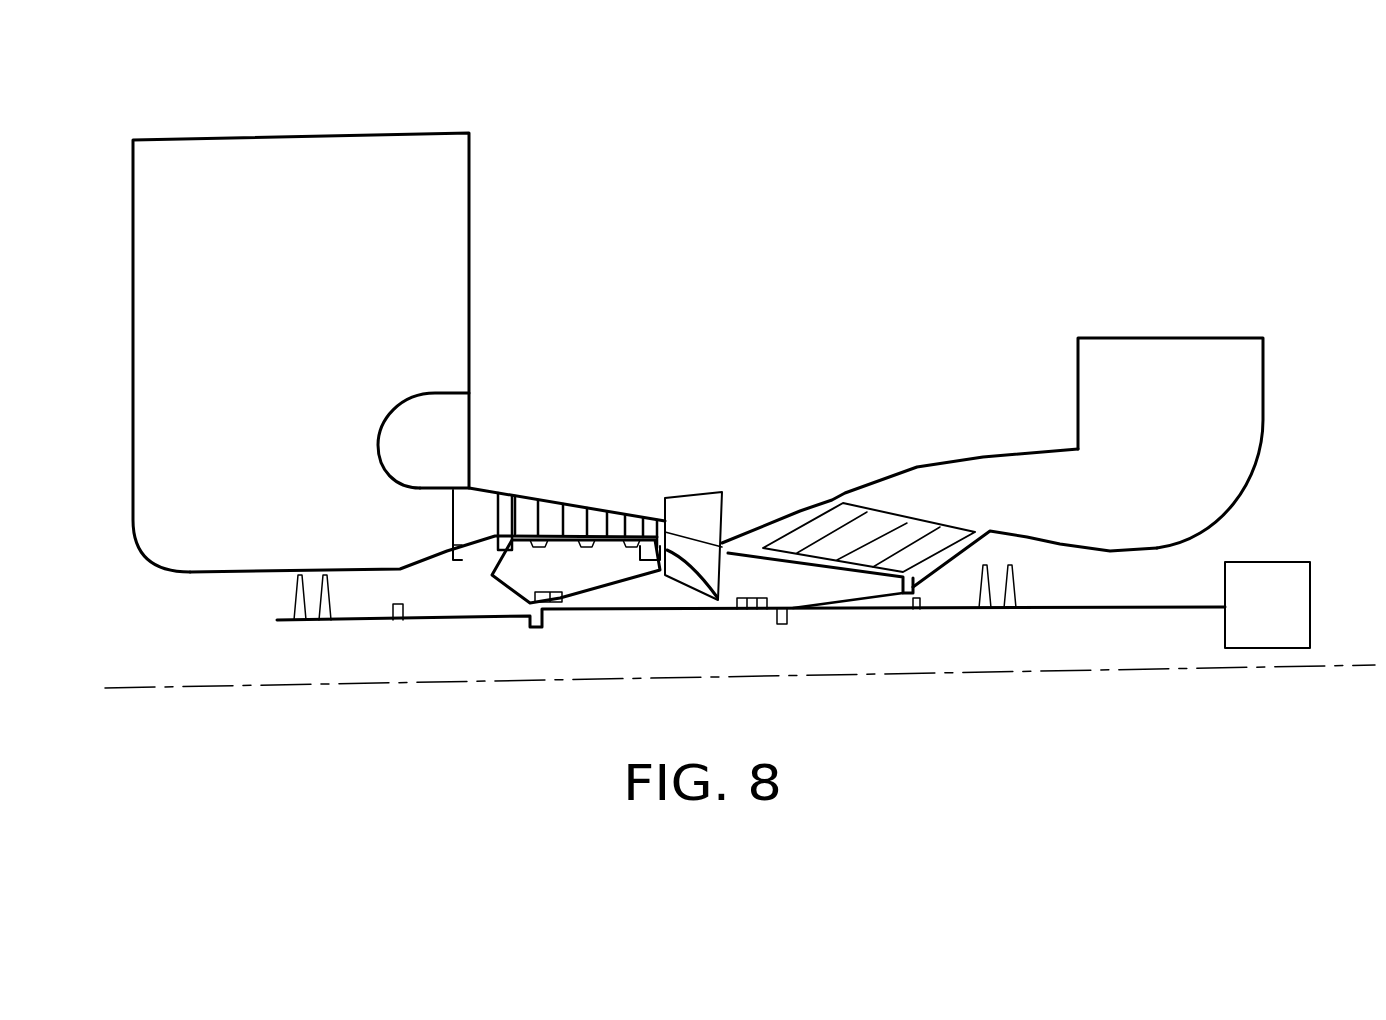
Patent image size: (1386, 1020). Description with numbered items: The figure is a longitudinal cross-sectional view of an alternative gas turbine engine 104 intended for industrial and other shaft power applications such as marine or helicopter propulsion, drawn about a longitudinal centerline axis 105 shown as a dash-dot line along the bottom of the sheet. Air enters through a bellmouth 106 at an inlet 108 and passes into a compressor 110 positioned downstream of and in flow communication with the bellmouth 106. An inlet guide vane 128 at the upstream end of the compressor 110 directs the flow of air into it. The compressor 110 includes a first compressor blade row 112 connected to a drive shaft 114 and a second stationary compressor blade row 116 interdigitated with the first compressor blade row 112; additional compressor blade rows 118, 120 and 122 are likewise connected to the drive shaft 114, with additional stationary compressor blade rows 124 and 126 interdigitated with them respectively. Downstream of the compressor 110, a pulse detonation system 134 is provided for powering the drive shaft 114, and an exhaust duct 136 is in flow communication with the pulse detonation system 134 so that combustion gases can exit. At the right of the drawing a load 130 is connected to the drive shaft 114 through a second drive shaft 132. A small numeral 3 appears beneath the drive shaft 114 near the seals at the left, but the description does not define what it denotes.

The gas turbine engine 104 is at (595, 85).
The inlet 108 is at (333, 216).
The bellmouth 106 is at (393, 413).
The inlet guide vane 128 is at (465, 518).
The first compressor blade row 112 is at (515, 490).
The compressor 110 is at (592, 485).
The additional compressor blade row 118 is at (572, 497).
The additional compressor blade row 120 is at (610, 512).
The additional stationary compressor blade row 126 is at (640, 505).
The additional compressor blade row 122 is at (648, 507).
The additional stationary compressor blade row 124 is at (592, 540).
The second stationary compressor blade row 116 is at (560, 546).
The drive shaft 114 is at (650, 614).
The section reference 3 is at (450, 620).
The longitudinal centerline axis 105 is at (595, 678).
The second drive shaft 132 is at (945, 615).
The load 130 is at (1252, 568).
The pulse detonation system 134 is at (816, 483).
The exhaust duct 136 is at (933, 477).